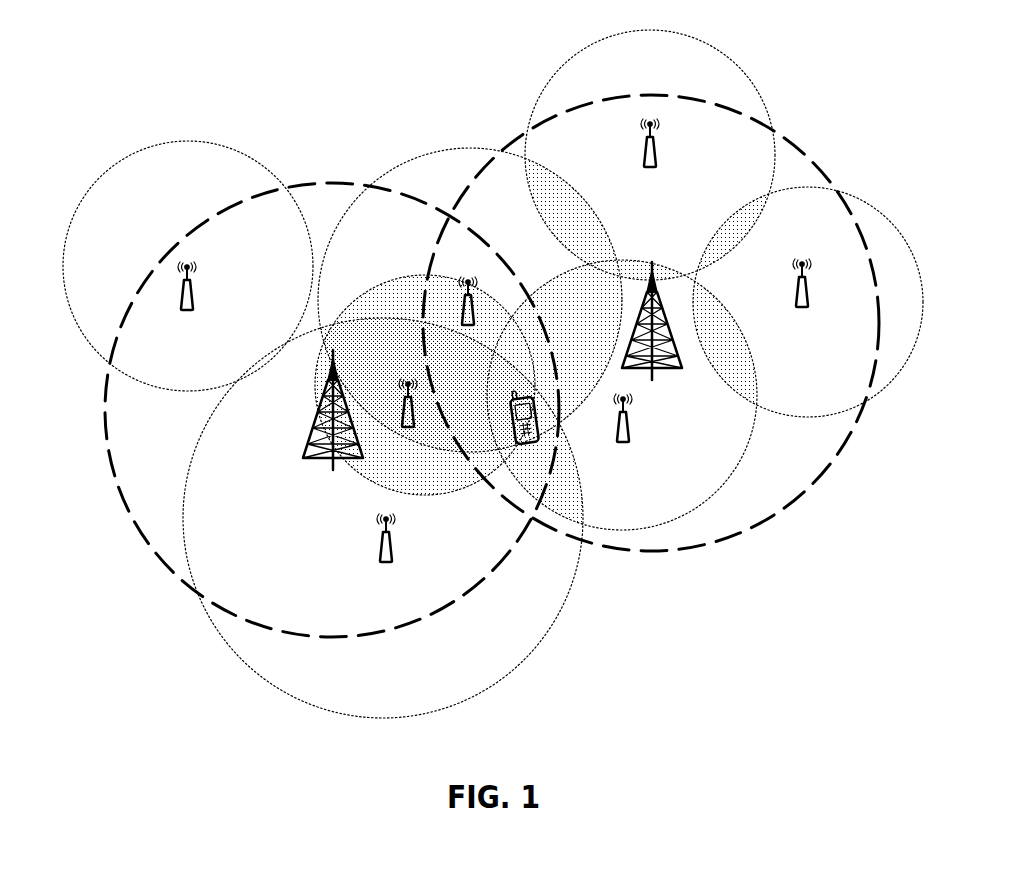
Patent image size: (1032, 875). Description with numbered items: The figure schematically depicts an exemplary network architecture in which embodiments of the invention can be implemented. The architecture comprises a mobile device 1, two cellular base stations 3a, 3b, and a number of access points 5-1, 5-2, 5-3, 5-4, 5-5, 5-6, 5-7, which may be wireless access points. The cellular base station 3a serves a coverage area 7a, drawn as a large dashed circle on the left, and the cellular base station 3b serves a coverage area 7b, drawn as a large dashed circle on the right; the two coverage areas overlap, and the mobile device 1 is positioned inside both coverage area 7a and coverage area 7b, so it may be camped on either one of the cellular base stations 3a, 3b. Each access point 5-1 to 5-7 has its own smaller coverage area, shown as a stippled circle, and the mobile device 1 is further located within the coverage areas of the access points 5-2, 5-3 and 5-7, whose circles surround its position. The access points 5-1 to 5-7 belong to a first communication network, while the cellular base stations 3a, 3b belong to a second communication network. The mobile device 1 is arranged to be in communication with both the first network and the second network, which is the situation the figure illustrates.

The mobile device 1 is at (536, 420).
The cellular base station 3a is at (322, 412).
The cellular base station 3b is at (640, 328).
The access point 5-1 is at (193, 296).
The access point 5-2 is at (474, 311).
The access point 5-3 is at (414, 413).
The access point 5-4 is at (392, 548).
The access point 5-5 is at (656, 153).
The access point 5-6 is at (808, 293).
The access point 5-7 is at (629, 428).
The coverage area 7a is at (159, 562).
The coverage area 7b is at (767, 119).